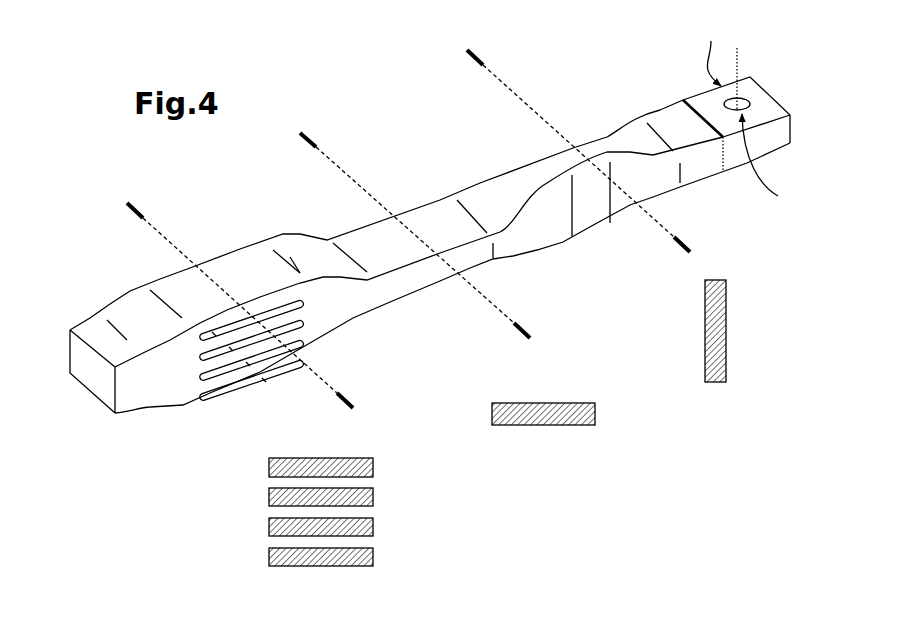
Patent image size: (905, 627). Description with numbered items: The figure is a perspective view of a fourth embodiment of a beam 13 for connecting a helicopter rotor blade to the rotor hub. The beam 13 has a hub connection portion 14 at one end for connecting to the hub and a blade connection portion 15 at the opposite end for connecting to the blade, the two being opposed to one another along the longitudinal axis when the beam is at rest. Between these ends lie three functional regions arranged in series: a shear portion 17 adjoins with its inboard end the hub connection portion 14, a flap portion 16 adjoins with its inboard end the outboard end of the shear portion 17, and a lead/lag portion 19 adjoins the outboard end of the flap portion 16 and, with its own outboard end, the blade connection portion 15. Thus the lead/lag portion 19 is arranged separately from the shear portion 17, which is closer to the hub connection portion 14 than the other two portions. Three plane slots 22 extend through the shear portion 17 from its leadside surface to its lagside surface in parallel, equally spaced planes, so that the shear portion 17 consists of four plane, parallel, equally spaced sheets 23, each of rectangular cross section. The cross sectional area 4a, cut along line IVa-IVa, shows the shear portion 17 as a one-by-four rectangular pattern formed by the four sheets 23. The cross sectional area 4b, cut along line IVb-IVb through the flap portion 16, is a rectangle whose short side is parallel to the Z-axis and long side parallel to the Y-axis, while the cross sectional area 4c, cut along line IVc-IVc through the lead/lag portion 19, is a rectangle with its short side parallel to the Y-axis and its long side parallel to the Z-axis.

The beam 13 is at (340, 96).
The hub connection portion 14 is at (112, 290).
The blade connection portion 15 is at (671, 66).
The flap portion 16 is at (438, 152).
The shear portion 17 is at (305, 205).
The lead/lag portion 19 is at (451, 148).
The slots 22 is at (291, 316).
The sheets 23 is at (214, 336).
The cross sectional area of the shear portion 4a is at (246, 516).
The cross sectional area of the flap portion 4b is at (477, 421).
The cross sectional area of the lead/lag portion 4c is at (690, 336).
The section line IVa- IVa is at (125, 213).
The section line IVb- IVb is at (298, 141).
The section line IVc- IVc is at (466, 62).